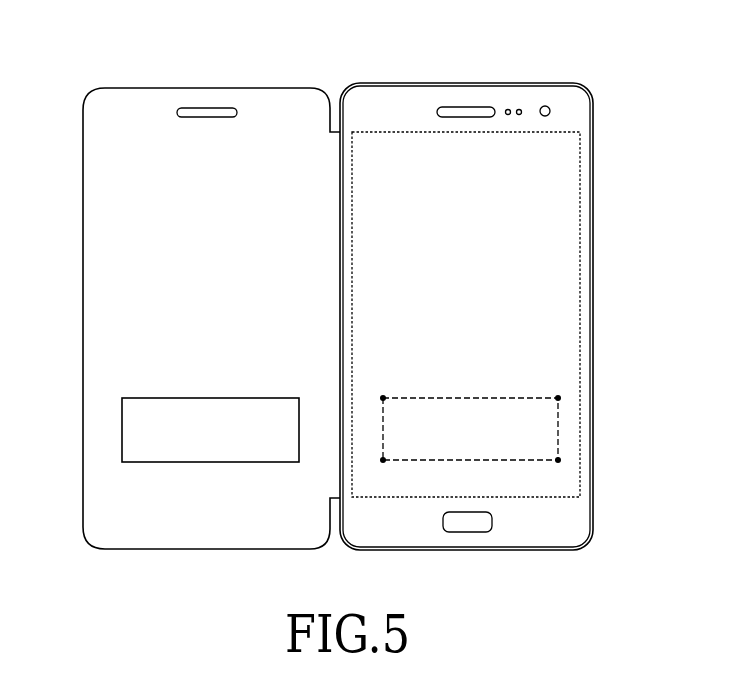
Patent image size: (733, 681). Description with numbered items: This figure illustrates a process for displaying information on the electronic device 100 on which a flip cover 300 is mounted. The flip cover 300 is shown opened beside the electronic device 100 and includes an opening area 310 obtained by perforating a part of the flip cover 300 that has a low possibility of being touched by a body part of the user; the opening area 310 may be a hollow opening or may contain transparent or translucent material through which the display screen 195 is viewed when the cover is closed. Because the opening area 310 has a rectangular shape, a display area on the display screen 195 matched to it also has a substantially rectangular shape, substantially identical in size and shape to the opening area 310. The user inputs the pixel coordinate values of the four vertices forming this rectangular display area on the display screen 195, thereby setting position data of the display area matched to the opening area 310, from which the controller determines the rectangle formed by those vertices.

The electronic device 100 is at (464, 83).
The display screen 195 is at (567, 244).
The flip cover 300 is at (205, 87).
The opening area 310 is at (122, 428).